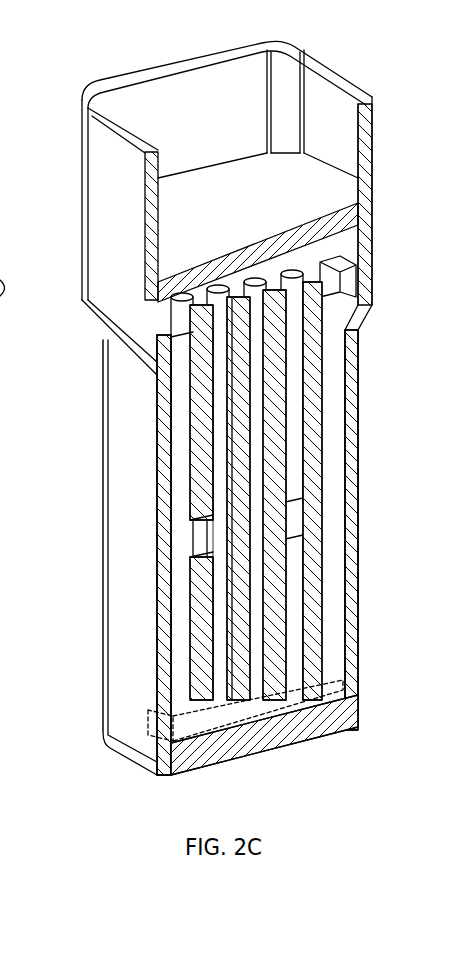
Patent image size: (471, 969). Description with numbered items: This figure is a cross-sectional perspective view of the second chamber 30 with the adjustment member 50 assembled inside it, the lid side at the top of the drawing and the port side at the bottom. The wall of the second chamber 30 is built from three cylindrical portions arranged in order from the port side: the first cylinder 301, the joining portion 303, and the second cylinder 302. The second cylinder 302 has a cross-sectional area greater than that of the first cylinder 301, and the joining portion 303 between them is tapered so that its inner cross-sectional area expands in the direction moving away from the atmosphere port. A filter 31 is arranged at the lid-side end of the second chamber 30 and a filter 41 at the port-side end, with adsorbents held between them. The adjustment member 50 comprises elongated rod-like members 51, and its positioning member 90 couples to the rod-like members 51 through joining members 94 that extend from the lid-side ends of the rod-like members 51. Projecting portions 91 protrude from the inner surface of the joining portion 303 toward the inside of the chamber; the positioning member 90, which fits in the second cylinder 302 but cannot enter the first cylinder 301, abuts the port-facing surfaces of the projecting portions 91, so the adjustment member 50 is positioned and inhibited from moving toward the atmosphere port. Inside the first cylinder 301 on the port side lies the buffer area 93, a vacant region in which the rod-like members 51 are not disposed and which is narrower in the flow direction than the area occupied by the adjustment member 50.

The second chamber 30 is at (150, 487).
The first cylinder 301 is at (128, 578).
The second cylinder 302 is at (107, 245).
The joining portion 303 is at (108, 340).
The filter 31 is at (197, 222).
The filter 41 is at (160, 757).
The adjustment member 50 is at (349, 535).
The rod-like members 51 is at (268, 645).
The positioning member 90 is at (340, 268).
The projecting portions 91 is at (356, 300).
The buffer area 93 is at (350, 690).
The joining members 94 is at (158, 314).